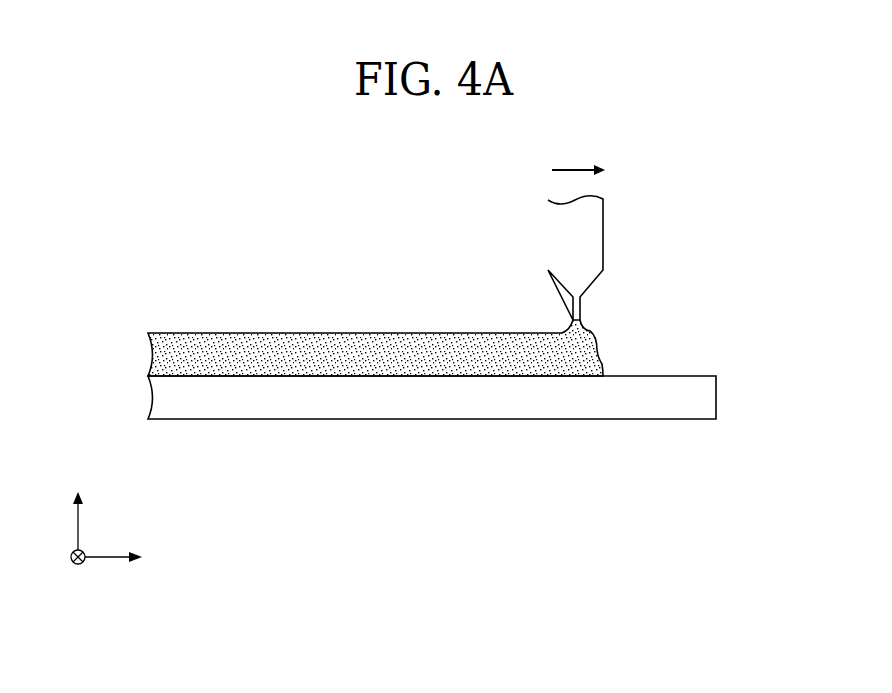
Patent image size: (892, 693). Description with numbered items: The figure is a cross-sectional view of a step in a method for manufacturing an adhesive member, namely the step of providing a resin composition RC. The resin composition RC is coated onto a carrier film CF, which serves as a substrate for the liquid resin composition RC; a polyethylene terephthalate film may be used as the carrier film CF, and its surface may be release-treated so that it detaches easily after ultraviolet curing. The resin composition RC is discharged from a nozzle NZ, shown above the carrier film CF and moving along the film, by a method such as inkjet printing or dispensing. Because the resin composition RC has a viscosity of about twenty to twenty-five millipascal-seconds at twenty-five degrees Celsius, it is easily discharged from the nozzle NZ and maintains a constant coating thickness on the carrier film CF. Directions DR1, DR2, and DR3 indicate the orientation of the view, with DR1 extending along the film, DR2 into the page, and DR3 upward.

The nozzle NZ is at (597, 241).
The resin composition RC is at (146, 352).
The carrier film CF is at (700, 401).
The first direction DR1 is at (135, 557).
The second direction DR2 is at (79, 573).
The third direction DR3 is at (79, 506).